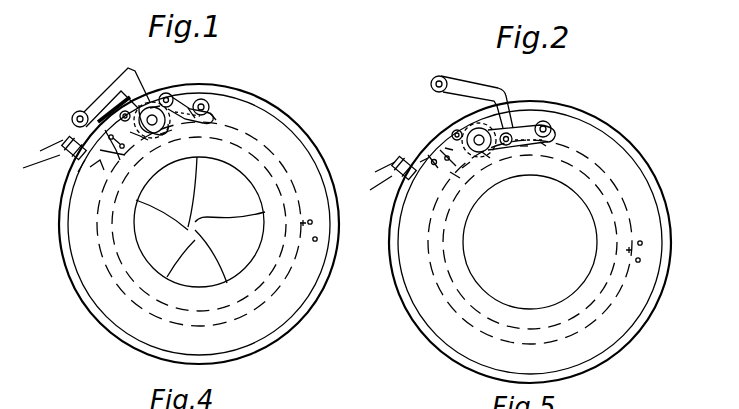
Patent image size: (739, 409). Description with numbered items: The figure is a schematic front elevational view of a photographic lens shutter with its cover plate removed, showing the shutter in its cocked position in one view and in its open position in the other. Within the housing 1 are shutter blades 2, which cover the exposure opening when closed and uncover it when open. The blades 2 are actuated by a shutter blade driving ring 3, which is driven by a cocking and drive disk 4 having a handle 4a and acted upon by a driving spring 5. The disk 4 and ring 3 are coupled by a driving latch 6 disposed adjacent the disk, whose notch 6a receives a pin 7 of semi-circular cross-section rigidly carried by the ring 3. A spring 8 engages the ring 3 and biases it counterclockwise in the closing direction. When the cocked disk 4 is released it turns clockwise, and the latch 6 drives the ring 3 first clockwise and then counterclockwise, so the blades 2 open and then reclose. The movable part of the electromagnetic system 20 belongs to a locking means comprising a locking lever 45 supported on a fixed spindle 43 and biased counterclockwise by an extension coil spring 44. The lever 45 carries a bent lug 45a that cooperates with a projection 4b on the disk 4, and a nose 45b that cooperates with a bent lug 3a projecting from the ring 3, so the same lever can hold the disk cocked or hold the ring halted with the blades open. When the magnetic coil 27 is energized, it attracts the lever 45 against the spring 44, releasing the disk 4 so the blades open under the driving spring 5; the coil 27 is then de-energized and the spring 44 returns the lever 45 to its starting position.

In FIG. 1, the shutter housing 1 is at (300, 131).
In FIG. 2, the shutter housing 1 is at (638, 156).
In FIG. 1, the shutter blades 2 is at (221, 183).
In FIG. 2, the shutter blades 2 is at (530, 242).
In FIG. 1, the shutter blade driving ring 3 is at (290, 181).
In FIG. 2, the shutter blade driving ring 3 is at (630, 203).
In FIG. 1, the lug 3a is at (100, 167).
In FIG. 2, the lug 3a is at (453, 174).
In FIG. 1, the cocking and drive disk 4 is at (160, 100).
In FIG. 2, the cocking and drive disk 4 is at (498, 133).
In FIG. 1, the handle 4a is at (112, 95).
In FIG. 2, the handle 4a is at (490, 95).
In FIG. 1, the projection 4b is at (146, 109).
In FIG. 2, the projection 4b is at (476, 128).
In FIG. 1, the driving spring 5 is at (168, 131).
In FIG. 2, the driving spring 5 is at (485, 153).
In FIG. 1, the driving latch 6 is at (182, 109).
In FIG. 2, the driving latch 6 is at (525, 147).
In FIG. 1, the notch 6a is at (217, 119).
In FIG. 2, the notch 6a is at (543, 144).
In FIG. 1, the pin 7 is at (207, 106).
In FIG. 2, the pin 7 is at (545, 127).
In FIG. 1, the spring 8 is at (318, 232).
In FIG. 2, the spring 8 is at (648, 245).
In FIG. 1, the electromagnetic system 20 is at (55, 143).
In FIG. 2, the electromagnetic system 20 is at (388, 163).
In FIG. 1, the magnetic coil 27 is at (68, 160).
In FIG. 2, the magnetic coil 27 is at (400, 168).
In FIG. 1, the fixed spindle 43 is at (125, 111).
In FIG. 2, the fixed spindle 43 is at (455, 130).
In FIG. 1, the extension coil spring 44 is at (142, 138).
In FIG. 2, the extension coil spring 44 is at (450, 156).
In FIG. 1, the locking lever 45 is at (118, 152).
In FIG. 2, the locking lever 45 is at (440, 150).
In FIG. 1, the bent lug 45a is at (105, 118).
In FIG. 2, the bent lug 45a is at (466, 168).
In FIG. 1, the nose 45b is at (78, 172).
In FIG. 2, the nose 45b is at (427, 158).